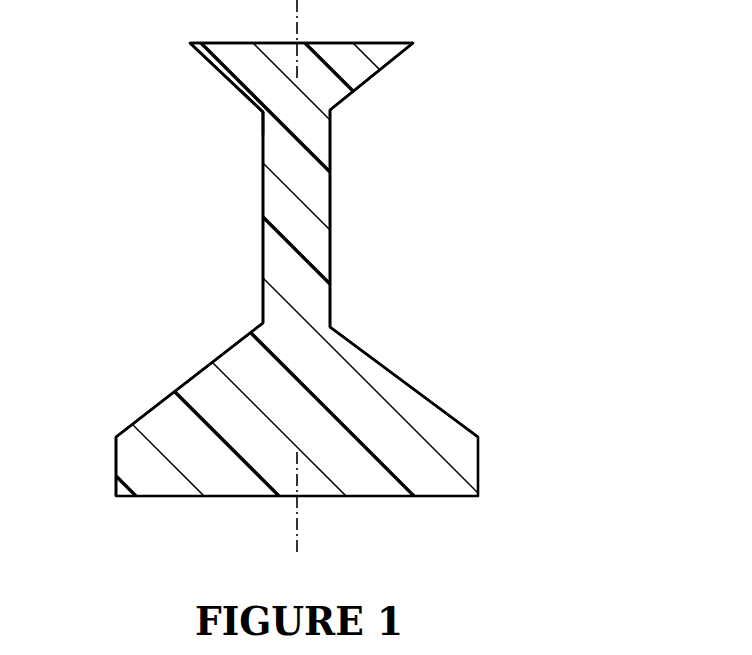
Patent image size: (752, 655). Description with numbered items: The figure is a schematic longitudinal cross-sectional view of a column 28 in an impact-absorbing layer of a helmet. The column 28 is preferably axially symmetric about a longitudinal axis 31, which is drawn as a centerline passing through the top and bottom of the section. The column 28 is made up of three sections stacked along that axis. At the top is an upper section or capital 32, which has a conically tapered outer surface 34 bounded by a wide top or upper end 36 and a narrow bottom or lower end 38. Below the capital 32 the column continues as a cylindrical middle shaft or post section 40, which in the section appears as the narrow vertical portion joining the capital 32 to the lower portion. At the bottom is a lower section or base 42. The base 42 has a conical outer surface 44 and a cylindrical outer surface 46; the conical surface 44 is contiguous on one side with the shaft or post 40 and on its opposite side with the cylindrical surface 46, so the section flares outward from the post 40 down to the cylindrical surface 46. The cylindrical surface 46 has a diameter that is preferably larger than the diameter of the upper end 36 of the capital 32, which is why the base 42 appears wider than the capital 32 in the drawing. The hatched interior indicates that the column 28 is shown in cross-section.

The column 28 is at (173, 200).
The longitudinal axis 31 is at (299, 538).
The upper section or capital 32 is at (215, 67).
The conically tapered outer surface 34 is at (363, 85).
The upper end 36 is at (228, 42).
The lower end 38 is at (262, 113).
The middle shaft or post section 40 is at (337, 215).
The base 42 is at (402, 378).
The conical outer surface 44 is at (215, 357).
The cylindrical outer surface 46 is at (116, 462).